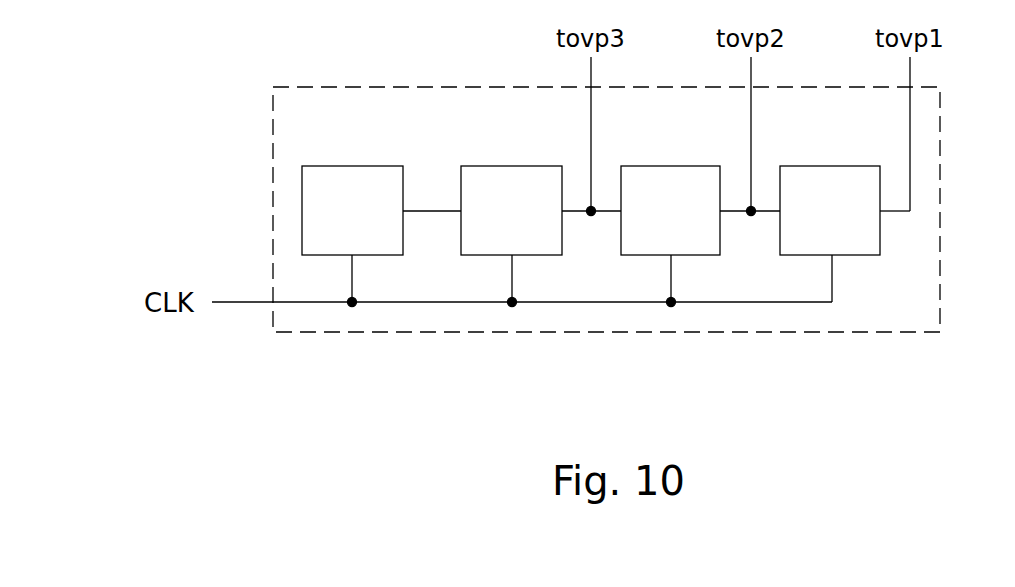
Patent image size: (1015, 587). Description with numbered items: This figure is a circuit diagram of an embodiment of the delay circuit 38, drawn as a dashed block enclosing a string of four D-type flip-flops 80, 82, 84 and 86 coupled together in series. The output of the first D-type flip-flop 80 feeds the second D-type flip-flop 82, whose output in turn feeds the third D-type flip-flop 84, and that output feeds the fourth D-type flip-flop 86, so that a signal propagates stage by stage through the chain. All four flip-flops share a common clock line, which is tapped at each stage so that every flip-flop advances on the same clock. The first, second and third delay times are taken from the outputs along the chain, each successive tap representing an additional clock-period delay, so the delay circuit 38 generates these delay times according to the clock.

The delay circuit 38 is at (942, 211).
The D-type flip-flop 80 is at (353, 166).
The D-type flip-flop 82 is at (513, 166).
The D-type flip-flop 84 is at (672, 166).
The D-type flip-flop 86 is at (832, 166).